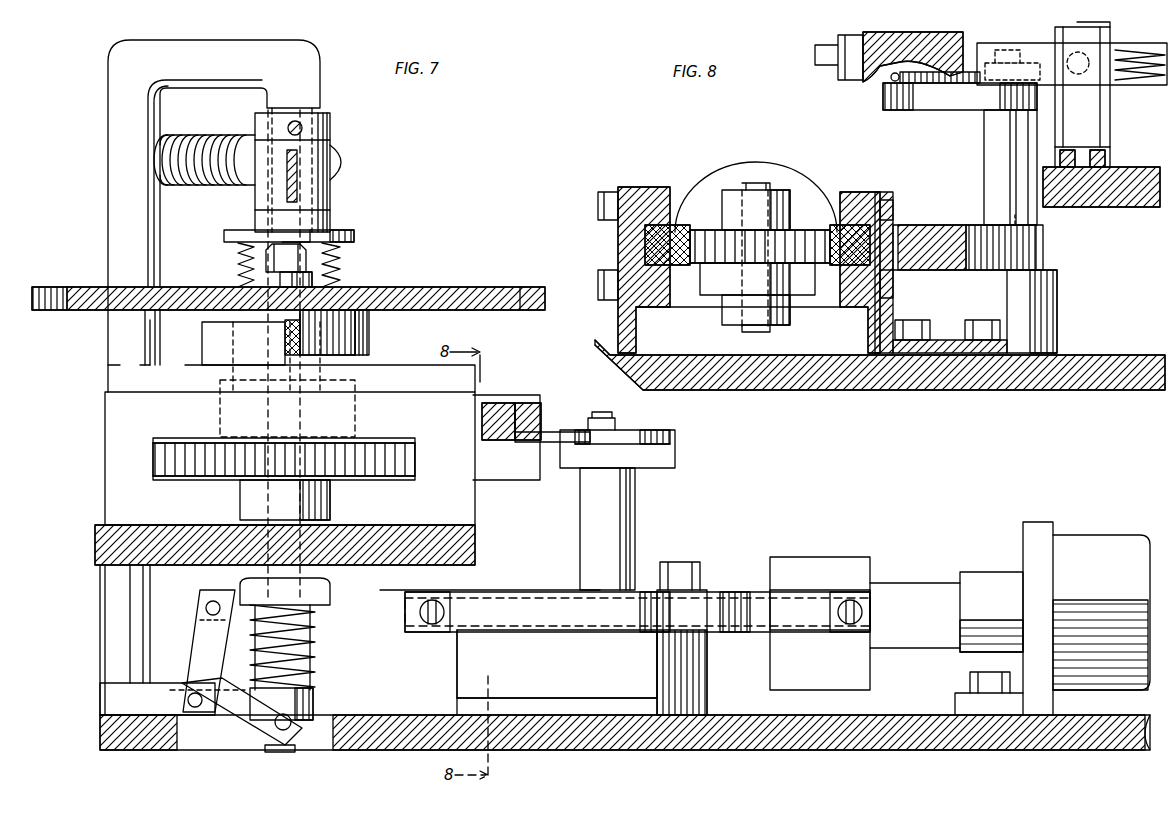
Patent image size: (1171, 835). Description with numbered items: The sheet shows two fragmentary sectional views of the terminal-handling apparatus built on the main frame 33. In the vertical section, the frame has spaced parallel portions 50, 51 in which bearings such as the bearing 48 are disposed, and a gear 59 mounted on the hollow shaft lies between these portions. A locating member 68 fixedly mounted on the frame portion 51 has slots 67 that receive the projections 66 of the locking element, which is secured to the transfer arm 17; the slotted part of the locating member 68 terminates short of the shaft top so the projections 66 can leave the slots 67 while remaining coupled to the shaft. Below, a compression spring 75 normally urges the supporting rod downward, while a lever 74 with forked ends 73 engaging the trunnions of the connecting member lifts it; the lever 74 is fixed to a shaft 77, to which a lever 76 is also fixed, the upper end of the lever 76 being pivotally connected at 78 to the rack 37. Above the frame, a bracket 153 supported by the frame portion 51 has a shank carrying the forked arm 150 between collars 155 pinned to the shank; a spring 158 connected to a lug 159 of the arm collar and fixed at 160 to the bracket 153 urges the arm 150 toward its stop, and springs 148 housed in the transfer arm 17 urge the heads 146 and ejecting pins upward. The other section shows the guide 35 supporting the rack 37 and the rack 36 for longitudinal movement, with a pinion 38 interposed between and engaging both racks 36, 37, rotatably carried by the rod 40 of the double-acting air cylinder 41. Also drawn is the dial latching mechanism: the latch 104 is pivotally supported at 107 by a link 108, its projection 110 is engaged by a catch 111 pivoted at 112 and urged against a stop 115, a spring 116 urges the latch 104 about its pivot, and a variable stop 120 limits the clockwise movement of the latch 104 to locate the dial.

In FIG. 7, the transfer arm 17 is at (430, 290).
In FIG. 7, the main frame 33 is at (150, 572).
In FIG. 8, the main frame 33 is at (890, 390).
In FIG. 8, the guide 35 is at (858, 192).
In FIG. 8, the rack 36 is at (668, 173).
In FIG. 7, the rack 37 is at (350, 626).
In FIG. 8, the rack 37 is at (838, 225).
In FIG. 8, the pinion 38 is at (708, 230).
In FIG. 7, the rod 40 is at (920, 592).
In FIG. 8, the rod 40 is at (785, 200).
In FIG. 7, the air cylinder 41 is at (1098, 545).
In FIG. 8, the air cylinder 41 is at (714, 183).
In FIG. 7, the bearing 48 is at (278, 748).
In FIG. 7, the frame portion 50 is at (100, 542).
In FIG. 7, the frame portion 51 is at (105, 405).
In FIG. 7, the gear 59 is at (393, 450).
In FIG. 7, the projections 66 is at (290, 350).
In FIG. 7, the slots 67 is at (305, 353).
In FIG. 7, the locating member 68 is at (369, 352).
In FIG. 7, the forked ends 73 is at (313, 710).
In FIG. 7, the lever 74 is at (230, 728).
In FIG. 7, the compression spring 75 is at (308, 662).
In FIG. 7, the lever 76 is at (200, 632).
In FIG. 7, the shaft 77 is at (188, 698).
In FIG. 7, the pivotal connection 78 is at (206, 608).
In FIG. 7, the latch 104 is at (536, 403).
In FIG. 8, the latch 104 is at (1040, 50).
In FIG. 8, the pivot 107 is at (1110, 125).
In FIG. 8, the link 108 is at (1118, 95).
In FIG. 8, the projection 110 is at (1067, 66).
In FIG. 7, the catch 111 is at (548, 432).
In FIG. 8, the catch 111 is at (990, 78).
In FIG. 7, the pivot 112 is at (615, 418).
In FIG. 8, the pivot 112 is at (1003, 50).
In FIG. 7, the stop 115 is at (578, 423).
In FIG. 8, the spring 116 is at (1155, 48).
In FIG. 7, the variable stop 120 is at (516, 403).
In FIG. 8, the variable stop 120 is at (838, 70).
In FIG. 7, the heads 146 is at (354, 237).
In FIG. 7, the springs 148 is at (238, 257).
In FIG. 7, the forked arm 150 is at (287, 190).
In FIG. 7, the bracket 153 is at (108, 115).
In FIG. 7, the collars 155 is at (330, 128).
In FIG. 7, the spring 158 is at (212, 145).
In FIG. 7, the lug 159 is at (348, 163).
In FIG. 7, the spring anchorage 160 is at (168, 142).